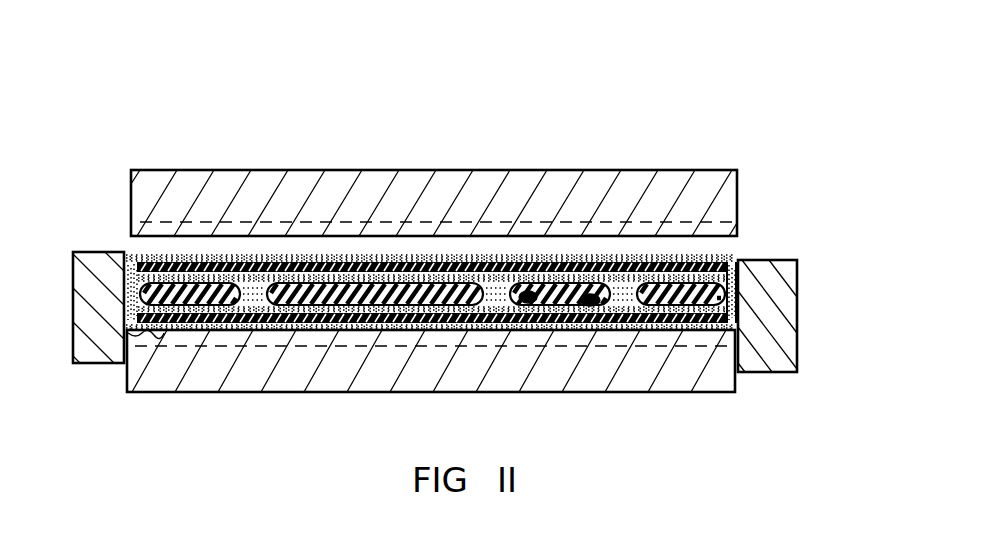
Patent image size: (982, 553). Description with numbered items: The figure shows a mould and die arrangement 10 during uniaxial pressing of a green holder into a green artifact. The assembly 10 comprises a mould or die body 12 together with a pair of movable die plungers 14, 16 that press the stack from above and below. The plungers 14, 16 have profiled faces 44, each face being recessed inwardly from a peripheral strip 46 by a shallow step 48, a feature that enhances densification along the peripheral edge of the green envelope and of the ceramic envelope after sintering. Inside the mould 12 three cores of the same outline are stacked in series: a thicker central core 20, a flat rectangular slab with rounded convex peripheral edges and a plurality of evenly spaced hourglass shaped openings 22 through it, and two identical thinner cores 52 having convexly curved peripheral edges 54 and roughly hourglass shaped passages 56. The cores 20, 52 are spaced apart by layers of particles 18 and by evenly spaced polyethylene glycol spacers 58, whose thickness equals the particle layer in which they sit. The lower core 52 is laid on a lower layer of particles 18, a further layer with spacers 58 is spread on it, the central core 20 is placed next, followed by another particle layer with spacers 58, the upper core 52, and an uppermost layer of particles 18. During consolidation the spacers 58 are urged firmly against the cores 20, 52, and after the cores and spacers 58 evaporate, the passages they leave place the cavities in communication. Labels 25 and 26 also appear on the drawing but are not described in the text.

The mould and die arrangement 10 is at (616, 84).
The mould or die body 12 is at (771, 347).
The movable die plunger 14 is at (362, 186).
The movable die plunger 16 is at (432, 370).
The layer of particles 18 is at (125, 283).
The core 20 is at (683, 262).
The opening 22 is at (572, 305).
The edge of laminate 25 is at (740, 330).
The direction of pressure 26 is at (452, 140).
The profiled face 44 is at (335, 222).
The peripheral strip 46 is at (748, 340).
The shallow step 48 is at (166, 223).
The thinner core 52 is at (540, 262).
The convexly curved peripheral edge 54 is at (130, 272).
The hourglass shaped passage 56 is at (404, 262).
The polyethylene glycol spacer 58 is at (681, 262).